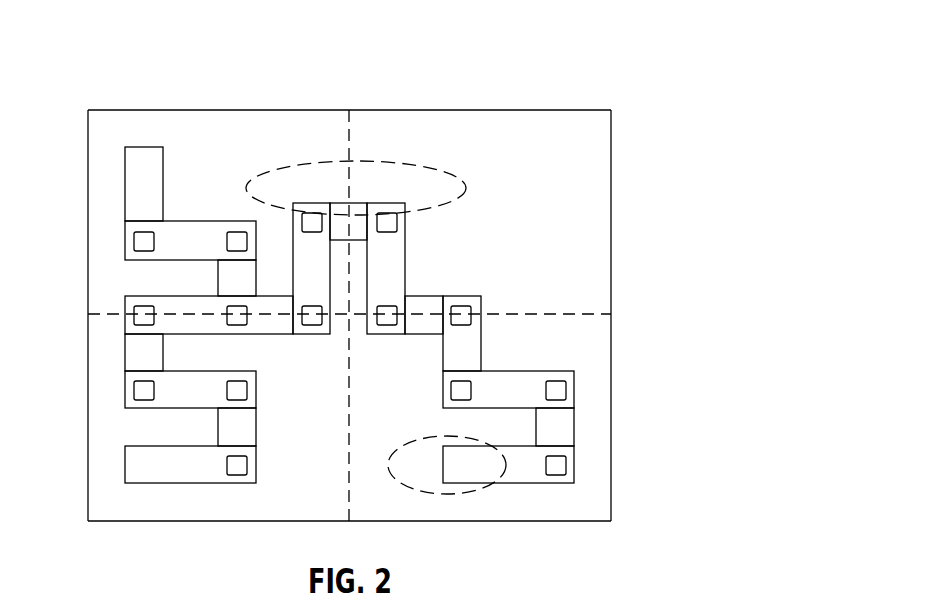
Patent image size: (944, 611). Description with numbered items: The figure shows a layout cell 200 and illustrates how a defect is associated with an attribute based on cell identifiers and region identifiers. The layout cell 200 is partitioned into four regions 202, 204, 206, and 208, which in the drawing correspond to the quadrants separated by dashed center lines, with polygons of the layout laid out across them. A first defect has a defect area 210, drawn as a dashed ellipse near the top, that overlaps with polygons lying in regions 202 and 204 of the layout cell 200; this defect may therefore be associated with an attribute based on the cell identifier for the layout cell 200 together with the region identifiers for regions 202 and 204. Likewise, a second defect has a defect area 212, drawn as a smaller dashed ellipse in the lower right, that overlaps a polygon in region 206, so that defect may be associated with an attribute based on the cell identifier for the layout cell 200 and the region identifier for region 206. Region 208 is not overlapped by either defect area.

The layout cell 200 is at (693, 115).
The region 202 is at (97, 108).
The region 204 is at (546, 110).
The region 206 is at (600, 522).
The region 208 is at (97, 522).
The defect area 210 is at (468, 185).
The defect area 212 is at (407, 446).